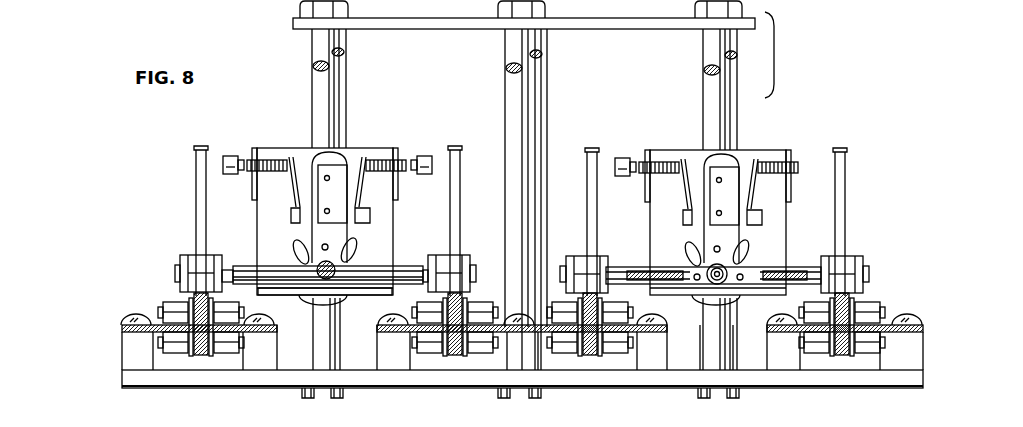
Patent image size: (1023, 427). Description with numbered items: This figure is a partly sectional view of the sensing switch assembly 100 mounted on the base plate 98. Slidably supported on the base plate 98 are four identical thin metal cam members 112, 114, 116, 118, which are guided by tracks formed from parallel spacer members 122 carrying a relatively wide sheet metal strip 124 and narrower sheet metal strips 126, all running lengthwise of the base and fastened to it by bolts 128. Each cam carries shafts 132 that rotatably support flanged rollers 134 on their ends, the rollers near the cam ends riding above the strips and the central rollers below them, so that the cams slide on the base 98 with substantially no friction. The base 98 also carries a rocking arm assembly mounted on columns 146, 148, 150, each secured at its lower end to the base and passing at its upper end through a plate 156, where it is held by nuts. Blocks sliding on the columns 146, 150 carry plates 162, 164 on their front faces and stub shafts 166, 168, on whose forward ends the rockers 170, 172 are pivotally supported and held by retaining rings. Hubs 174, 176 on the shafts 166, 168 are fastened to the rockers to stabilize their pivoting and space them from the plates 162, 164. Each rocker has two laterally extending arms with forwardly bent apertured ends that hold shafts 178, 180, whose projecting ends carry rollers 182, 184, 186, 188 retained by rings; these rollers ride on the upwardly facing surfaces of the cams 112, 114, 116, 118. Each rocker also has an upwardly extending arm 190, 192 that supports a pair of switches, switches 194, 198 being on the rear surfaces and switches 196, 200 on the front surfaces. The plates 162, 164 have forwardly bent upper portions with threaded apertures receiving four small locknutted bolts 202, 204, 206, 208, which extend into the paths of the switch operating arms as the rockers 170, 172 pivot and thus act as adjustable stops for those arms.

The base plate 98 is at (908, 381).
The sensing switch assembly 100 is at (840, 81).
The cam member 112 is at (200, 149).
The cam member 114 is at (457, 151).
The cam member 116 is at (590, 152).
The cam member 118 is at (844, 172).
The spacer member 122 is at (130, 350).
The sheet metal strip 124 is at (501, 333).
The sheet metal strip 126 is at (384, 324).
The bolt 128 is at (130, 322).
The shaft 132 is at (497, 326).
The flanged roller 134 is at (416, 305).
The column 146 is at (314, 67).
The column 148 is at (504, 72).
The column 150 is at (706, 75).
The plate 156 is at (666, 29).
The plate 162 is at (258, 211).
The plate 164 is at (782, 228).
The stub shaft 166 is at (348, 260).
The stub shaft 168 is at (728, 272).
The rocker 170 is at (345, 261).
The rocker 172 is at (640, 267).
The hub 174 is at (338, 268).
The hub 176 is at (690, 258).
The shaft 178 is at (276, 284).
The shaft 180 is at (656, 283).
The roller 182 is at (192, 258).
The roller 184 is at (456, 262).
The roller 186 is at (585, 260).
The roller 188 is at (850, 263).
The upwardly extending arm 190 is at (321, 153).
The upwardly extending arm 192 is at (724, 158).
The switch 194 is at (293, 213).
The switch 196 is at (352, 215).
The switch 198 is at (688, 218).
The switch 200 is at (745, 217).
The bolt 202 is at (229, 155).
The bolt 204 is at (418, 156).
The bolt 206 is at (622, 158).
The bolt 208 is at (814, 158).